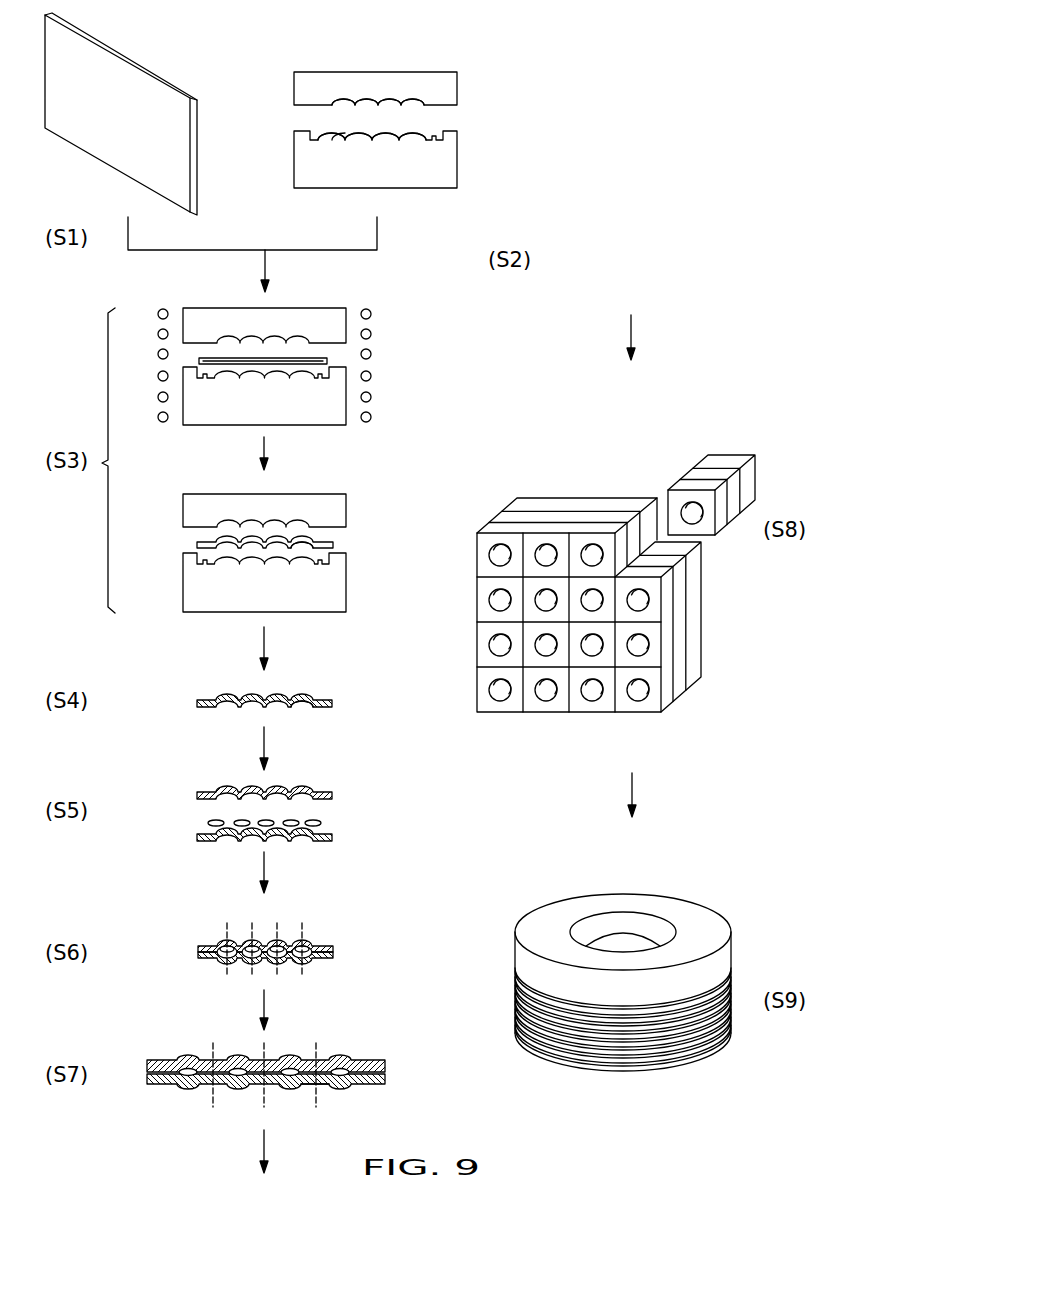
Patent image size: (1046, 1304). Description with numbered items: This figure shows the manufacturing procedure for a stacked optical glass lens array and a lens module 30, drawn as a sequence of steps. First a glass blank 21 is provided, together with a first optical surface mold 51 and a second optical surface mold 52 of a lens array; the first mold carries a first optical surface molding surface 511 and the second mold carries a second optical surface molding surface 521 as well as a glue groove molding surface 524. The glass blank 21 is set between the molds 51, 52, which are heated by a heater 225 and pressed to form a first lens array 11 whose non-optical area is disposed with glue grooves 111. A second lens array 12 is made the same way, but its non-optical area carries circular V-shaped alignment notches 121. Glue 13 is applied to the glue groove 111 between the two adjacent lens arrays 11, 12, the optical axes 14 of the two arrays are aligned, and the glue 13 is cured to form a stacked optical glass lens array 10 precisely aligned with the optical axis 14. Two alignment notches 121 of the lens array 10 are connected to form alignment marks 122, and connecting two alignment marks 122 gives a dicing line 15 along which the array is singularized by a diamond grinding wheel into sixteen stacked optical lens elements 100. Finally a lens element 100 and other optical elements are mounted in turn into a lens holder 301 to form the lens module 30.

The glass blank 21 is at (112, 152).
The first optical surface mold 51 is at (384, 278).
The first optical surface molding surface 511 is at (388, 100).
The second optical surface mold 52 is at (444, 371).
The glue groove molding surface 524 is at (440, 145).
The second optical surface molding surface 521 is at (387, 135).
The heater 225 is at (371, 354).
The first lens array 11 is at (287, 800).
The glue groove 111 is at (322, 547).
The second lens array 12 is at (296, 909).
The alignment notch 121 is at (322, 705).
The alignment mark 122 is at (316, 1080).
The glue 13 is at (210, 820).
The optical axis 14 is at (265, 1000).
The stacked optical glass lens array 10 is at (393, 756).
The dicing line 15 is at (473, 672).
The stacked optical lens element 100 is at (703, 448).
The lens module 30 is at (615, 956).
The lens holder 301 is at (525, 1005).